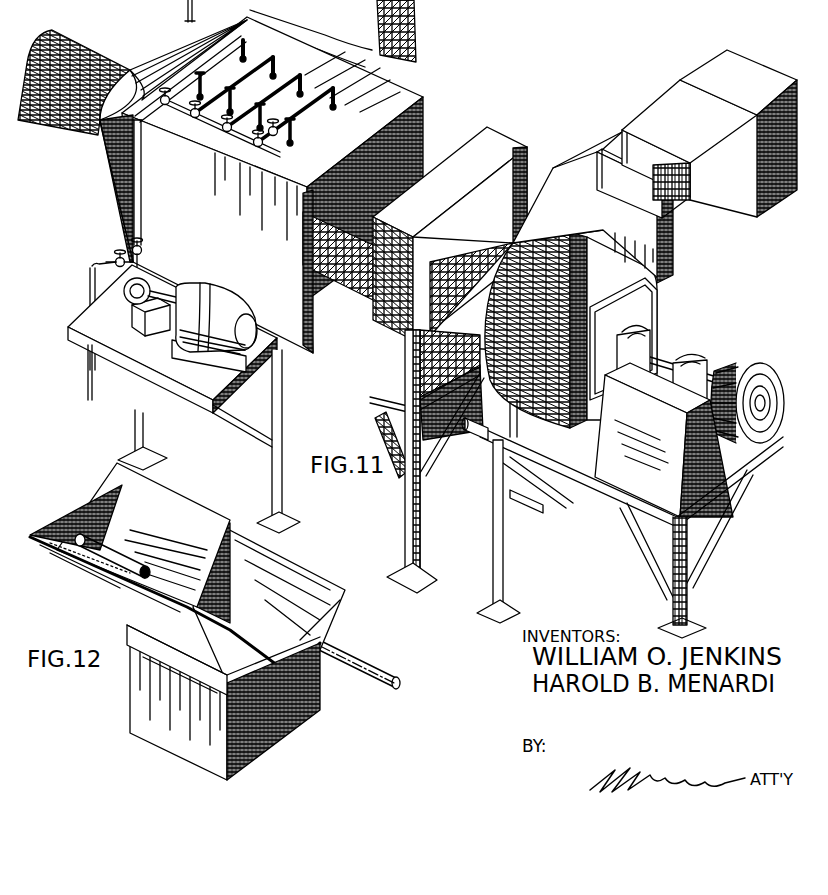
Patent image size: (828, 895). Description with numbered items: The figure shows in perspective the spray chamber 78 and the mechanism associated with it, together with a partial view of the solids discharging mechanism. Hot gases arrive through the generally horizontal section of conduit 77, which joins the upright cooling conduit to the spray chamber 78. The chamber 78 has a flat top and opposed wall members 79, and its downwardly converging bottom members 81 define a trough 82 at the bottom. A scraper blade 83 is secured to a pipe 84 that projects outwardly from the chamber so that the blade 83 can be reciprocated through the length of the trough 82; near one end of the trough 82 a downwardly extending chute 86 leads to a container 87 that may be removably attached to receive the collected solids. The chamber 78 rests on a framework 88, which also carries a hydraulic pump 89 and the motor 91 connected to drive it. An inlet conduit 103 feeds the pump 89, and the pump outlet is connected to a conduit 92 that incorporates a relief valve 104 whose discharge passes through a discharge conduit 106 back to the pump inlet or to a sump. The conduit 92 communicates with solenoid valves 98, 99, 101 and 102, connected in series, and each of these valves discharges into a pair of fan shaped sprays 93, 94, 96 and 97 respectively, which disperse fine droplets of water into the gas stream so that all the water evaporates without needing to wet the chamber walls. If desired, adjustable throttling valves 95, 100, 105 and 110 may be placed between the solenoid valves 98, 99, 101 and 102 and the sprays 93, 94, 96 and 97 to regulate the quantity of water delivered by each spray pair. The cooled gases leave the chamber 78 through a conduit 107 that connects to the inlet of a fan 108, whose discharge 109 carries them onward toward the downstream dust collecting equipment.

In FIG. 11, the horizontal section of conduit 77 is at (56, 128).
In FIG. 11, the spray chamber 78 is at (400, 101).
In FIG. 11, the opposed wall members 79 is at (425, 133).
In FIG. 12, the downwardly converging bottom members 81 is at (190, 516).
In FIG. 12, the trough 82 is at (167, 521).
In FIG. 12, the scraper blade 83 is at (90, 507).
In FIG. 11, the pipe 84 is at (483, 453).
In FIG. 12, the chute 86 is at (250, 677).
In FIG. 12, the container 87 is at (210, 740).
In FIG. 11, the framework 88 is at (421, 515).
In FIG. 11, the hydraulic pump 89 is at (150, 282).
In FIG. 11, the motor 91 is at (208, 297).
In FIG. 11, the conduit 92 is at (142, 169).
In FIG. 11, the fan shaped sprays 93 is at (233, 58).
In FIG. 11, the fan shaped sprays 94 is at (262, 74).
In FIG. 11, the adjustable throttling valve 95 is at (180, 85).
In FIG. 11, the fan shaped sprays 96 is at (292, 94).
In FIG. 11, the fan shaped sprays 97 is at (325, 109).
In FIG. 11, the solenoid valve 98 is at (165, 106).
In FIG. 11, the solenoid valve 99 is at (195, 119).
In FIG. 11, the adjustable throttling valve 100 is at (262, 66).
In FIG. 11, the solenoid valve 101 is at (227, 133).
In FIG. 11, the solenoid valve 102 is at (258, 148).
In FIG. 11, the inlet conduit 103 is at (88, 292).
In FIG. 11, the relief valve 104 is at (141, 250).
In FIG. 11, the adjustable throttling valve 105 is at (245, 135).
In FIG. 11, the discharge conduit 106 is at (115, 257).
In FIG. 11, the conduit 107 is at (523, 213).
In FIG. 11, the fan 108 is at (623, 257).
In FIG. 11, the discharge 109 is at (680, 227).
In FIG. 11, the adjustable throttling valve 110 is at (276, 136).